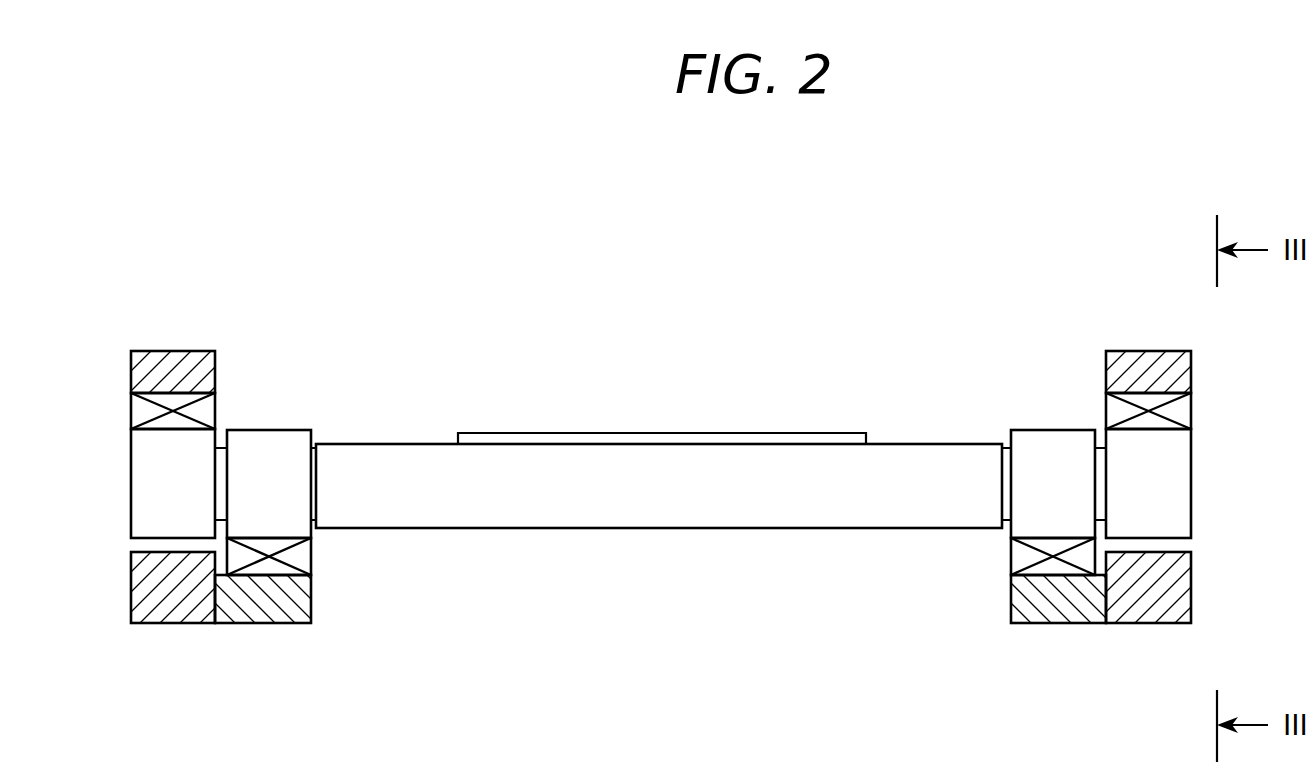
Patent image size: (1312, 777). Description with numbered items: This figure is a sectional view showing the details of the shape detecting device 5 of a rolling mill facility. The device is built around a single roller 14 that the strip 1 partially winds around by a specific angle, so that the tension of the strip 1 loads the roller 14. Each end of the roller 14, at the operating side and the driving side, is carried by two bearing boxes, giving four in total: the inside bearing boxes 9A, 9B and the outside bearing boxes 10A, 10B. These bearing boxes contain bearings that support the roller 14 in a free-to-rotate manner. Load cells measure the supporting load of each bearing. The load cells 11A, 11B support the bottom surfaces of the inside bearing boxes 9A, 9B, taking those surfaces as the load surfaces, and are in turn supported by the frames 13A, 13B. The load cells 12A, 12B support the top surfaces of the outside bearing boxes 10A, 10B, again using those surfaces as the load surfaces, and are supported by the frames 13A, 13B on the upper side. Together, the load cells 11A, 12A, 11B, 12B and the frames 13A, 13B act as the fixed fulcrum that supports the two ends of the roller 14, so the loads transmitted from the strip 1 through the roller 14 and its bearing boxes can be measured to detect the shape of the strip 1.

The strip 1 is at (773, 433).
The shape detecting device 5 is at (850, 246).
The inside bearing box 9A is at (1053, 430).
The inside bearing box 9B is at (270, 430).
The outside bearing box 10A is at (1191, 503).
The outside bearing box 10B is at (130, 488).
The load cell 11A is at (1012, 563).
The load cell 11B is at (312, 557).
The load cell 12A is at (1191, 410).
The load cell 12B is at (130, 406).
The frame 13A is at (1191, 597).
The frame 13B is at (130, 580).
The roller 14 is at (790, 529).